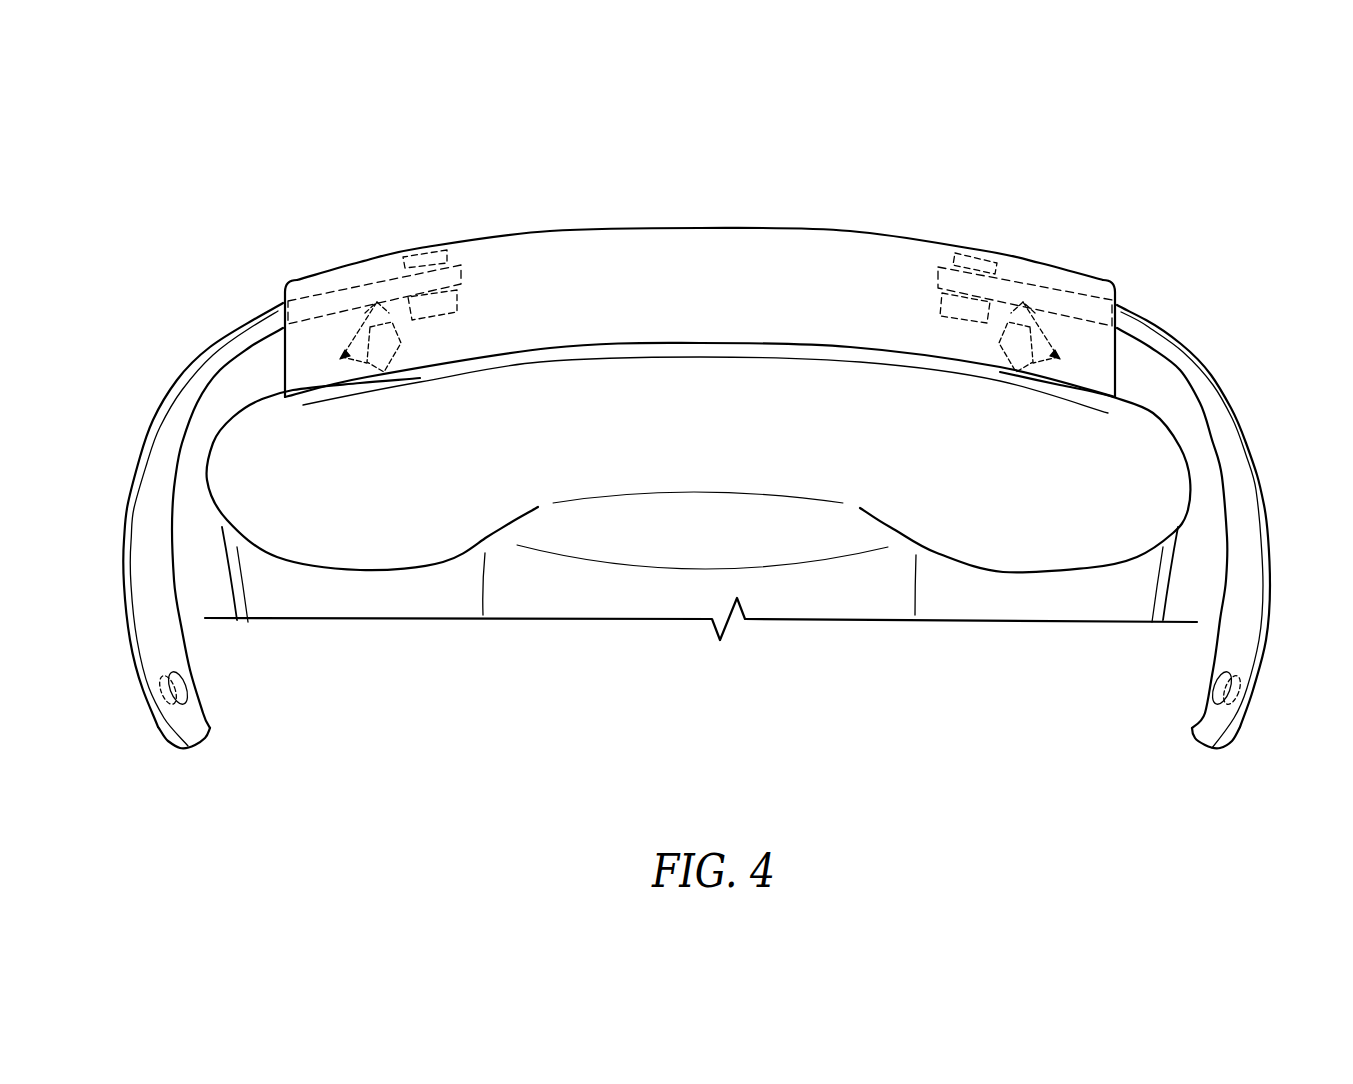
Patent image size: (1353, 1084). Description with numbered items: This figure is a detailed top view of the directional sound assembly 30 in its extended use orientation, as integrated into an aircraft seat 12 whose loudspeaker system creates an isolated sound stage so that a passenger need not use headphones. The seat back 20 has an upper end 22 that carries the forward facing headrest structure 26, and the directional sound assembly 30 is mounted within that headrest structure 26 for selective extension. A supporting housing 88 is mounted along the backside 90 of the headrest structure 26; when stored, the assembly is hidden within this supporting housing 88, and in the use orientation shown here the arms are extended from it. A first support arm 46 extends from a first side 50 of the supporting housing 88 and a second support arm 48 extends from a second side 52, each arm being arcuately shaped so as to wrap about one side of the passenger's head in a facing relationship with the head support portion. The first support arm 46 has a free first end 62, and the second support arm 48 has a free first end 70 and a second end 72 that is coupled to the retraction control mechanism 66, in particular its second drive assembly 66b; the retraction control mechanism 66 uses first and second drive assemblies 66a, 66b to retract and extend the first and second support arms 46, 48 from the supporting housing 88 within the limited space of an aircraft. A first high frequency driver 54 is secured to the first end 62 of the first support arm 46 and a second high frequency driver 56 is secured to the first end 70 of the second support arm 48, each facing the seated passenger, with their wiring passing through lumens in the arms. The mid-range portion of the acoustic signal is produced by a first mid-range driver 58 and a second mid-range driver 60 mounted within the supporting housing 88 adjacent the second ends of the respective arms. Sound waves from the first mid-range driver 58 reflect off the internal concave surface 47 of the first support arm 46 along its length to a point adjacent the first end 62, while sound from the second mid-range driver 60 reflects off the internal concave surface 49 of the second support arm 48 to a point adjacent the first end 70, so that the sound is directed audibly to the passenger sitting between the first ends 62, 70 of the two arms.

The aircraft seat 12 is at (405, 650).
The seat back 20 is at (1028, 555).
The upper end 22 is at (328, 530).
The headrest structure 26 is at (753, 472).
The directional sound assembly 30 is at (505, 209).
The first support arm 46 is at (130, 617).
The internal concave surface 47 is at (186, 455).
The second support arm 48 is at (1272, 557).
The internal concave surface 49 is at (1237, 510).
The first side 50 is at (307, 276).
The second side 52 is at (1097, 283).
The first high frequency driver 54 is at (160, 690).
The second high frequency driver 56 is at (1238, 688).
The first mid-range driver 58 is at (390, 358).
The second mid-range driver 60 is at (1037, 321).
The first end 62 is at (373, 277).
The retraction control mechanism 66 is at (890, 214).
The first drive assembly 66a is at (430, 253).
The second drive assembly 66b is at (967, 253).
The first end 70 is at (1240, 720).
The second end 72 is at (1233, 408).
The supporting housing 88 is at (678, 226).
The backside 90 is at (257, 402).